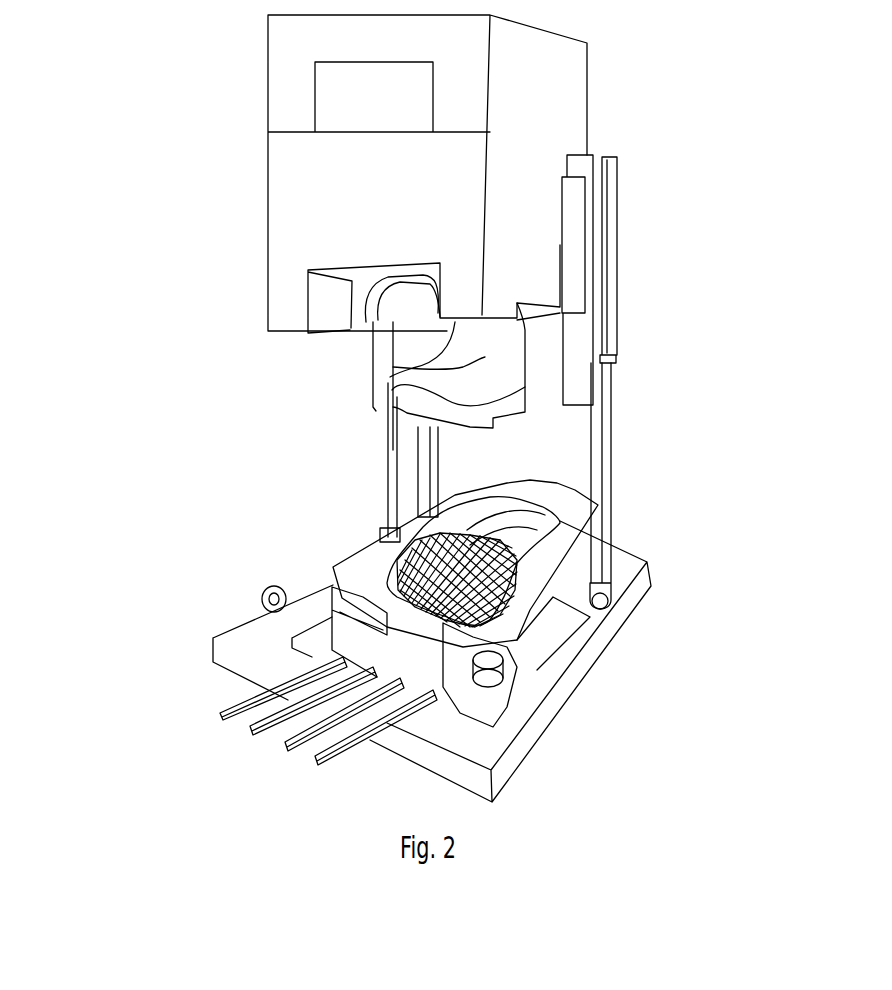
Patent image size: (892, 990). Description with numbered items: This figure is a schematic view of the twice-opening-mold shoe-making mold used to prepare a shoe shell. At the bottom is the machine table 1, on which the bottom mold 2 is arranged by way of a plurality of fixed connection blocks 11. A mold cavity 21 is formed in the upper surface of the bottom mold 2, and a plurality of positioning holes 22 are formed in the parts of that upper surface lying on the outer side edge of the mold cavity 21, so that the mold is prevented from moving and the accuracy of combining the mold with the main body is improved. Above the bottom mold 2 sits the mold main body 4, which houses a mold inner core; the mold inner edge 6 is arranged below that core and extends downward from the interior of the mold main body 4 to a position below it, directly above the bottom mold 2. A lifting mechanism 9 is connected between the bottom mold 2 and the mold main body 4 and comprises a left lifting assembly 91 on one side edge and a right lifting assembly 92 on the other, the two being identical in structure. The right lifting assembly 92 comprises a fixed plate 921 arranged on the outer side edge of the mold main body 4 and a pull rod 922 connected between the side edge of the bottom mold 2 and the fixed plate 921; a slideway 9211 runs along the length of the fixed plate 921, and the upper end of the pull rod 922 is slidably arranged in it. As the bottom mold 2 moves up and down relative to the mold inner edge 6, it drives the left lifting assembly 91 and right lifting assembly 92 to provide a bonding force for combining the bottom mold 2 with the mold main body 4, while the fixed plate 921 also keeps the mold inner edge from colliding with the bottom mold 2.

The machine table 1 is at (248, 638).
The fixed connection blocks 11 is at (233, 712).
The bottom mold 2 is at (540, 623).
The mold cavity 21 is at (385, 553).
The positioning holes 22 is at (340, 590).
The mold main body 4 is at (288, 207).
The mold inner edge 6 is at (390, 385).
The lifting mechanism 9 is at (446, 382).
The left lifting assembly 91 is at (383, 447).
The right lifting assembly 92 is at (659, 382).
The fixed plate 921 is at (670, 260).
The slideway 9211 is at (602, 303).
The pull rod 922 is at (606, 509).